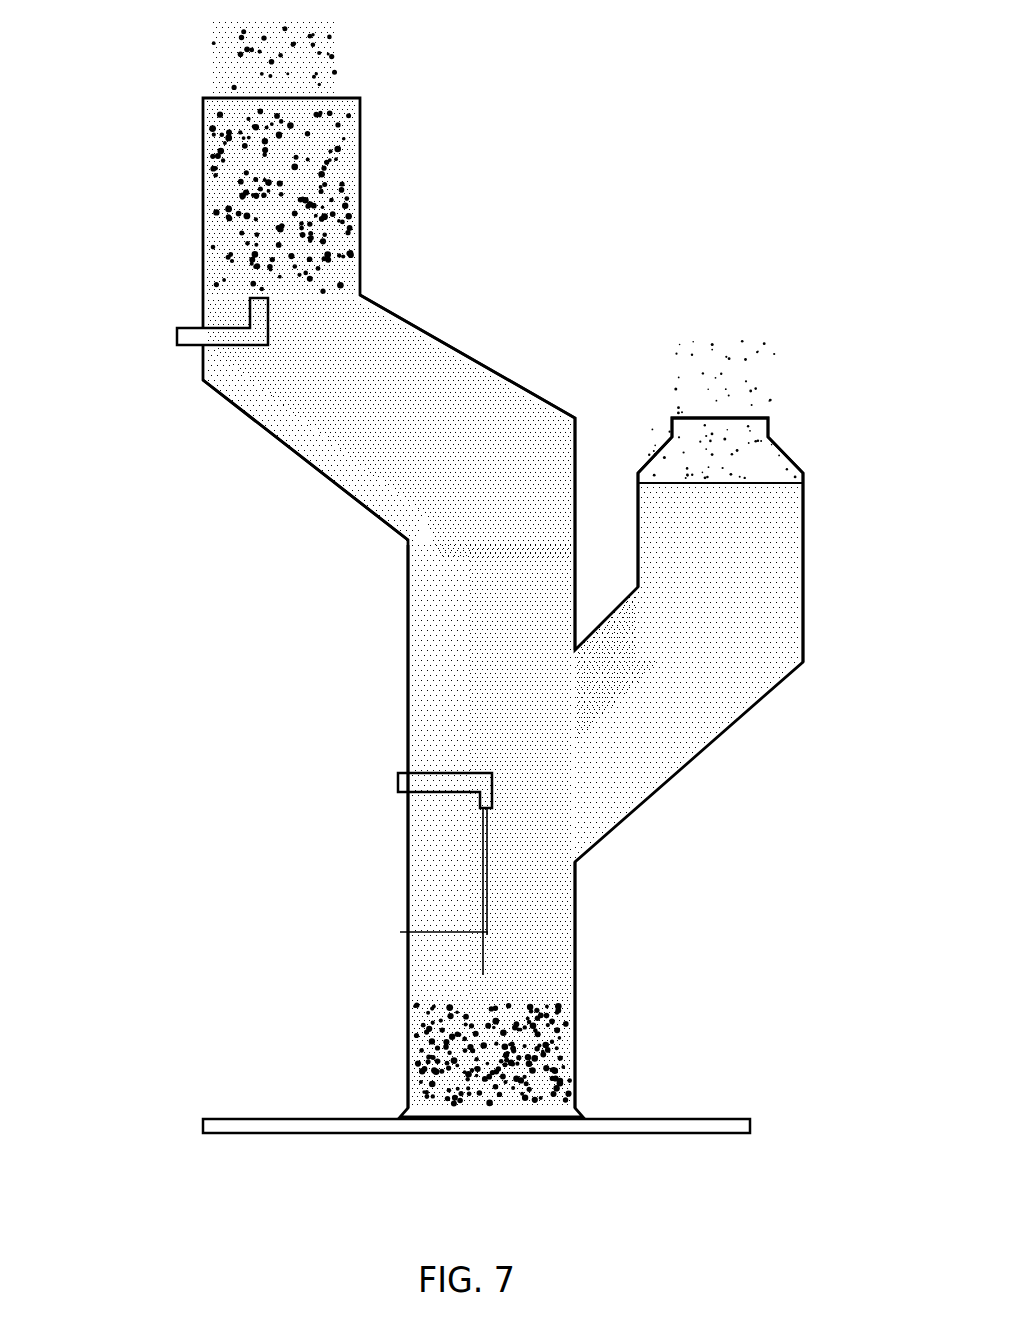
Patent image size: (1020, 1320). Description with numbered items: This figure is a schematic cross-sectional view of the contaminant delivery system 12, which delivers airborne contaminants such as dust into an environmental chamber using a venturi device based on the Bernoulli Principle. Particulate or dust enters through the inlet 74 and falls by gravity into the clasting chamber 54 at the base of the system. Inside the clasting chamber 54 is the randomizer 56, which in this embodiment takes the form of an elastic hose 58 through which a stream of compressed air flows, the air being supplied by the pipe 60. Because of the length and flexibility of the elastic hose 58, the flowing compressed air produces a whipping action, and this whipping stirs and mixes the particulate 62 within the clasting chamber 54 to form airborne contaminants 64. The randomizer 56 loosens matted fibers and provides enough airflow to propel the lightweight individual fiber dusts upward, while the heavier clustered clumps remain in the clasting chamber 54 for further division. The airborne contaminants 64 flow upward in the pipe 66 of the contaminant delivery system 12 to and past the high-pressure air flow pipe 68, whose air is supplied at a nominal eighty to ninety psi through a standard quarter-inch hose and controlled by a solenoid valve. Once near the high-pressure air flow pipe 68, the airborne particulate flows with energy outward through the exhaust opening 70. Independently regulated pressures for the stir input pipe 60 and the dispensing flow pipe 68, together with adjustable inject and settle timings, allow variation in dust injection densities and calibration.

The contaminant delivery system 12 is at (485, 212).
The clasting chamber 54 is at (562, 978).
The randomizer 56 is at (480, 903).
The elastic hose 58 is at (450, 1007).
The pipe 60 is at (420, 772).
The particulate 62 is at (550, 1121).
The airborne contaminants 64 is at (458, 388).
The pipe 66 is at (313, 472).
The high-pressure air flow pipe 68 is at (177, 334).
The exhaust opening 70 is at (287, 92).
The inlet 74 is at (723, 433).